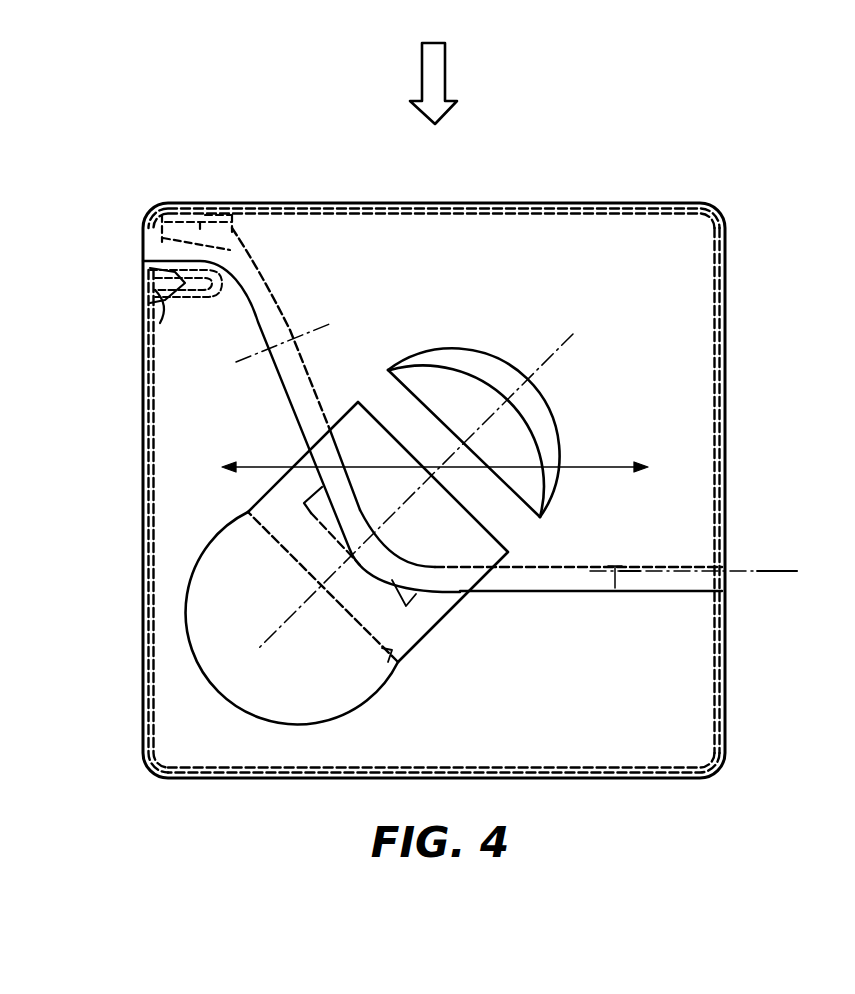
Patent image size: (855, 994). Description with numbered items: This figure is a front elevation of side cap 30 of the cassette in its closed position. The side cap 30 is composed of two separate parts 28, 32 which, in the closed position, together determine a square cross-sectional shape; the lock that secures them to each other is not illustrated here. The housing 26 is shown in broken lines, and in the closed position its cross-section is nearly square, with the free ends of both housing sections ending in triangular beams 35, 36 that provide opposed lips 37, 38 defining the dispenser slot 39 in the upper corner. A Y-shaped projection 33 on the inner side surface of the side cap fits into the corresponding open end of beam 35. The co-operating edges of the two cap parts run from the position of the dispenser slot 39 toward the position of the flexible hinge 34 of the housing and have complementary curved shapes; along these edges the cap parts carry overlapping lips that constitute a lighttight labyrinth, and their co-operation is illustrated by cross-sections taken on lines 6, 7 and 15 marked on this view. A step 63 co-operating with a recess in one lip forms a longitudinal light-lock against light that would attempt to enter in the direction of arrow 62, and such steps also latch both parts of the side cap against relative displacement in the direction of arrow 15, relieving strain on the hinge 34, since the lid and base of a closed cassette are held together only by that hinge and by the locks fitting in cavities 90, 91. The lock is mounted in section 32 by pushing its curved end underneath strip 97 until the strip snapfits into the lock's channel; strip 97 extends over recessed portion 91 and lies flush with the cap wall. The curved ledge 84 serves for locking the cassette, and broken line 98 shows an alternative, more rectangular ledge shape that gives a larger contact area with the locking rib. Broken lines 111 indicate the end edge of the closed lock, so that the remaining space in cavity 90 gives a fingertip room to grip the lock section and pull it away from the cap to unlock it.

The housing 26 is at (607, 205).
The side cap part 28 is at (700, 717).
The side cap 30 is at (440, 75).
The side cap part 32 is at (698, 321).
The Y-shaped projection 33 is at (165, 289).
The hinge 34 is at (727, 591).
The triangular beam 35 is at (158, 328).
The triangular beam 36 is at (223, 207).
The lip 37 is at (160, 264).
The lip 38 is at (198, 243).
The dispenser slot 39 is at (0, 186).
The arrow 62 is at (765, 580).
The step 63 is at (253, 273).
The curved ledge 84 is at (455, 582).
The cavity 90 is at (250, 680).
The cavity 91 is at (455, 397).
The strip 97 is at (400, 413).
The broken line 98 is at (407, 607).
The broken lines 111 is at (386, 660).
The section line 6- 6 is at (215, 308).
The section line 7- 7 is at (633, 507).
The section line 15-15 / arrow 15 is at (287, 466).